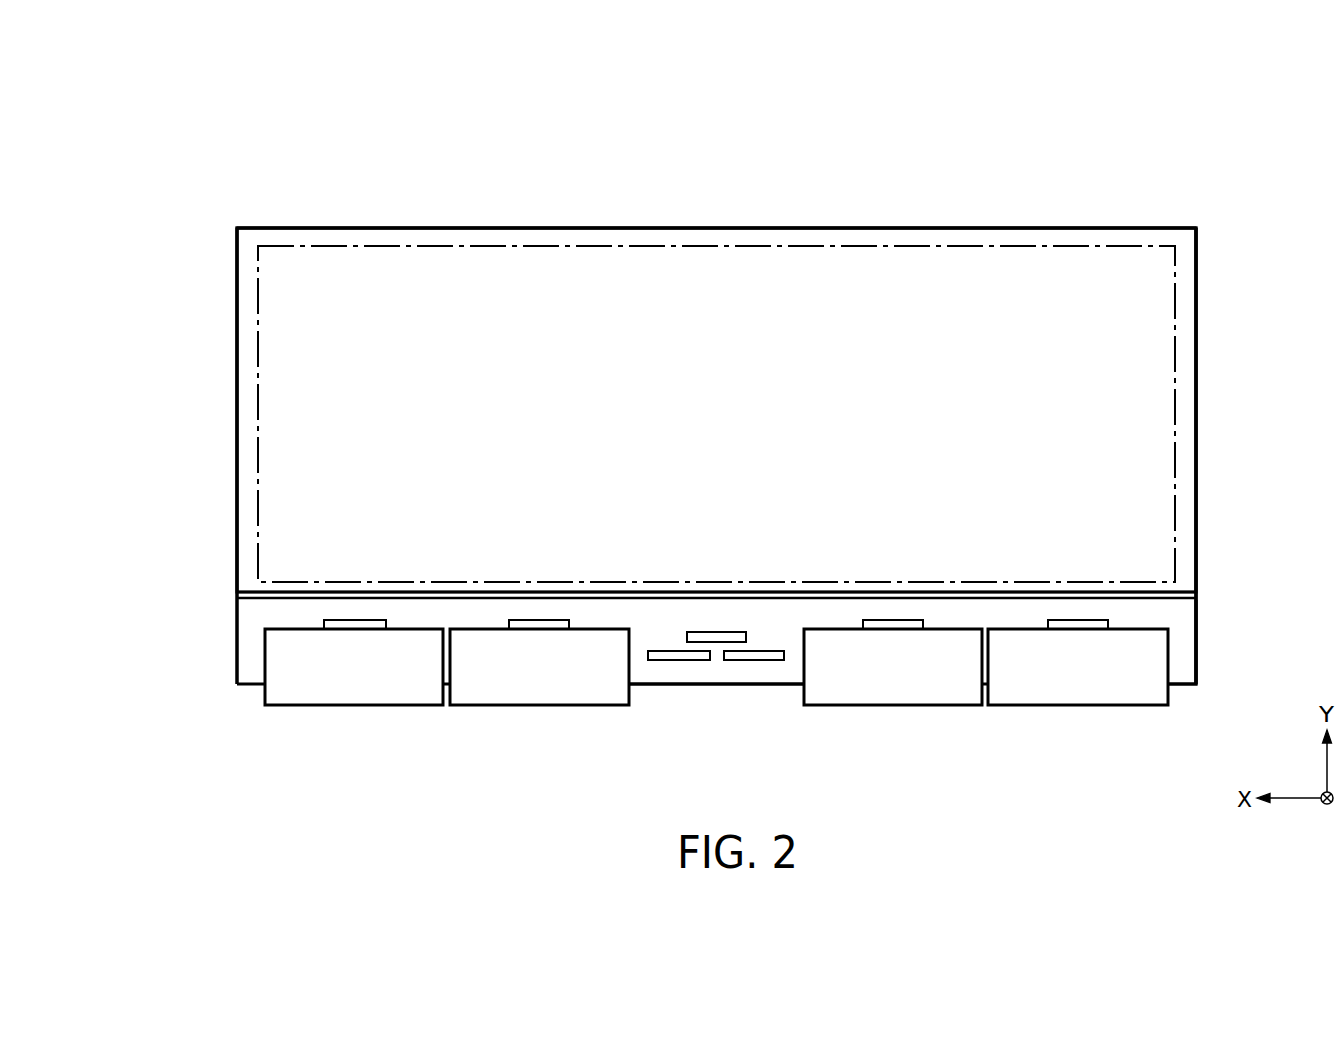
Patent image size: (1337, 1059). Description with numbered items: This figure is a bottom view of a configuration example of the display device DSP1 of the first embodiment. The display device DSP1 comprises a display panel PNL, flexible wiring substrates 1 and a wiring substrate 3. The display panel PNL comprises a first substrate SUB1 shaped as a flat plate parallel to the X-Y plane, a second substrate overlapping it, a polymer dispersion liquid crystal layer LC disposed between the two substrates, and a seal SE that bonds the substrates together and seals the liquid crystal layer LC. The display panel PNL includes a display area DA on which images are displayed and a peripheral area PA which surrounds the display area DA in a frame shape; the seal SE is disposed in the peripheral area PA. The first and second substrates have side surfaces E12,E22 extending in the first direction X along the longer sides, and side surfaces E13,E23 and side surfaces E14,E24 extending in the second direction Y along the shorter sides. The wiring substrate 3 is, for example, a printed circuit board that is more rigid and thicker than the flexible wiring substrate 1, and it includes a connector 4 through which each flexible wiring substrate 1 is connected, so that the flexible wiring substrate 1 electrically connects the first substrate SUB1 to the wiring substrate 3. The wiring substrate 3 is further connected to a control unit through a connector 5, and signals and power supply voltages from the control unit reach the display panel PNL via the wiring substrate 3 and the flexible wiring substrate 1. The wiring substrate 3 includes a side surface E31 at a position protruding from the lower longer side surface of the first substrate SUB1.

The display device DSP1 is at (695, 463).
The display panel PNL is at (1162, 227).
The first substrate SUB1 is at (1185, 577).
The liquid crystal layer LC is at (1152, 532).
The seal SE is at (1187, 487).
The display area DA is at (1158, 405).
The peripheral area PA is at (1190, 444).
The side surfaces E14,E24 is at (228, 242).
The side surfaces E12,E22 is at (933, 215).
The side surfaces E13,E23 is at (1207, 306).
The side surface E31 is at (788, 698).
The wiring substrate 3 is at (1182, 675).
The flexible wiring substrate 1 is at (339, 698).
The connector 4 is at (369, 625).
The connector 5 is at (716, 642).